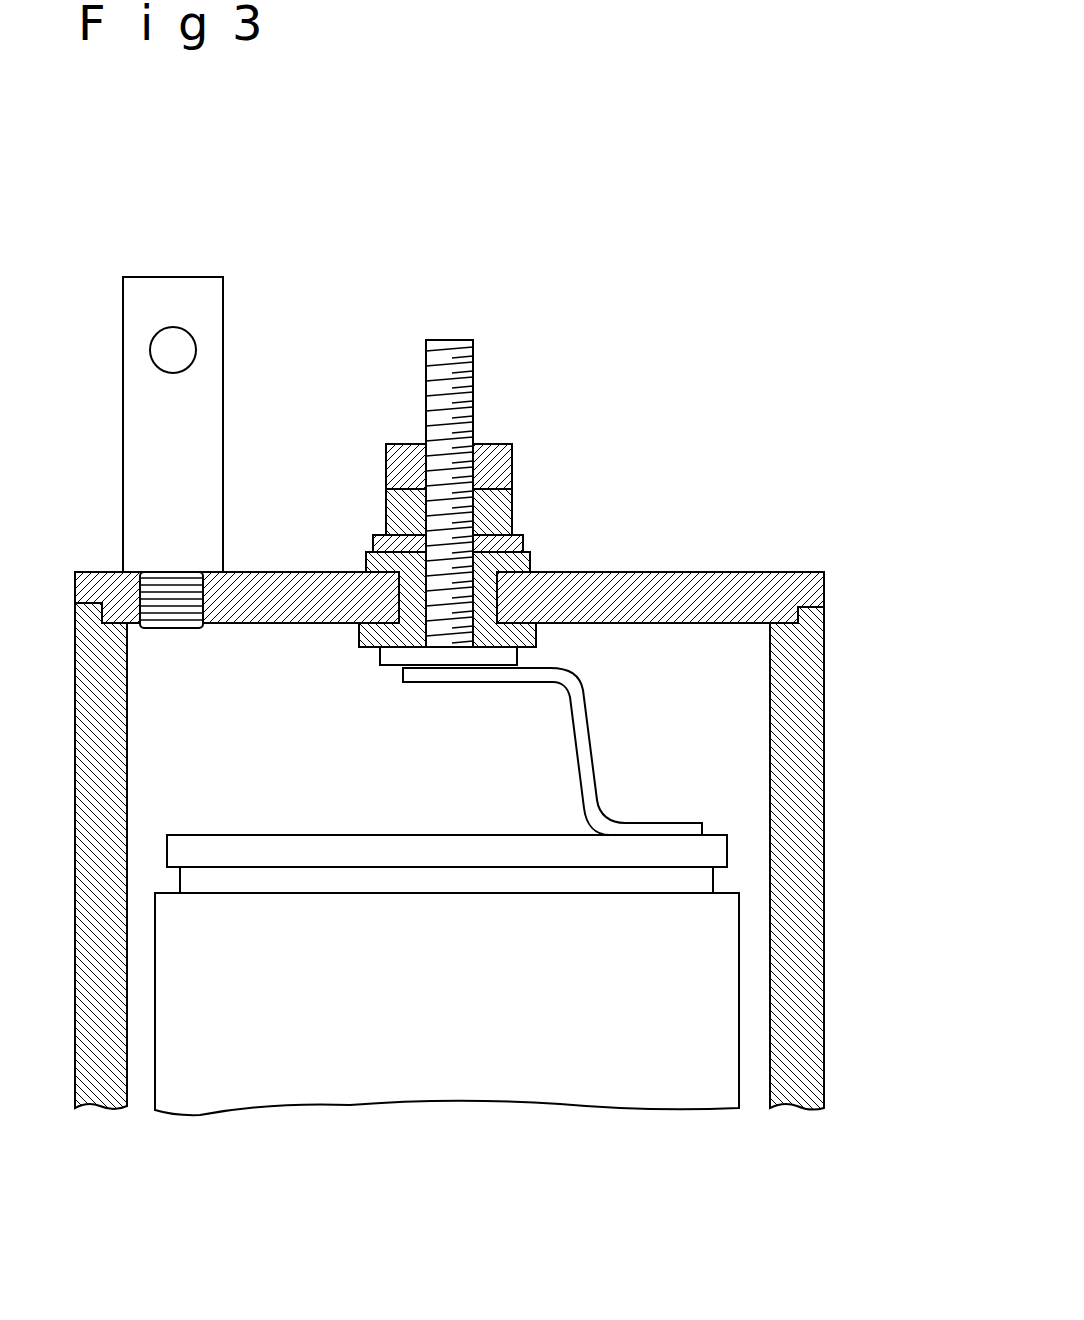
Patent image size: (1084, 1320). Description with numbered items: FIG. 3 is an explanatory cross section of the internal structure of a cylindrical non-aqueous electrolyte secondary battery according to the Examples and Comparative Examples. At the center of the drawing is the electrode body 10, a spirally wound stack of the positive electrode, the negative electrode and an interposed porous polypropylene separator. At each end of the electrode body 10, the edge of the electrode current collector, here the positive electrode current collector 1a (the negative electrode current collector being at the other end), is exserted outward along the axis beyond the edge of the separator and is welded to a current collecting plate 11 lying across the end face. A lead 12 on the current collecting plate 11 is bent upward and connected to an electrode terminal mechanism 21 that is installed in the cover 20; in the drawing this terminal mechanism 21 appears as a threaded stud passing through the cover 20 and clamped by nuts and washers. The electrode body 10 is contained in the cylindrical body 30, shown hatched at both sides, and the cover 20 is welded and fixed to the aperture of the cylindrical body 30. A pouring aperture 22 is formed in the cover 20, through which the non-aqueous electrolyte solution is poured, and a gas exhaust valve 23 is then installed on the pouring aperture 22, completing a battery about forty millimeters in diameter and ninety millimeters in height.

The electrode body 10 is at (706, 1000).
The current collecting plate 11 is at (255, 852).
The lead 12 is at (573, 730).
The cover 20 is at (675, 595).
The electrode terminal mechanism 21 is at (448, 335).
The pouring aperture 22 is at (207, 602).
The gas exhaust valve 23 is at (176, 300).
The cylindrical body 30 is at (797, 753).
The positive electrode current collector 1a is at (408, 878).